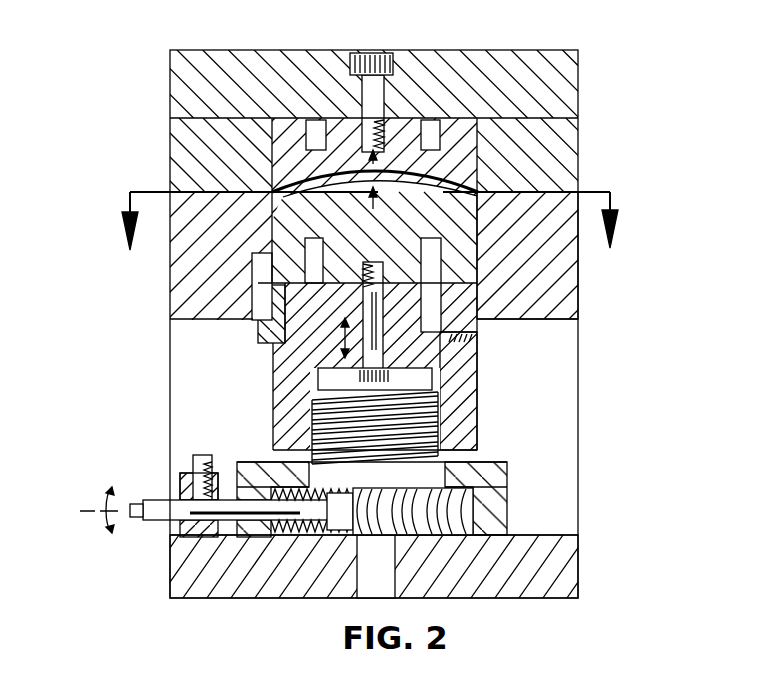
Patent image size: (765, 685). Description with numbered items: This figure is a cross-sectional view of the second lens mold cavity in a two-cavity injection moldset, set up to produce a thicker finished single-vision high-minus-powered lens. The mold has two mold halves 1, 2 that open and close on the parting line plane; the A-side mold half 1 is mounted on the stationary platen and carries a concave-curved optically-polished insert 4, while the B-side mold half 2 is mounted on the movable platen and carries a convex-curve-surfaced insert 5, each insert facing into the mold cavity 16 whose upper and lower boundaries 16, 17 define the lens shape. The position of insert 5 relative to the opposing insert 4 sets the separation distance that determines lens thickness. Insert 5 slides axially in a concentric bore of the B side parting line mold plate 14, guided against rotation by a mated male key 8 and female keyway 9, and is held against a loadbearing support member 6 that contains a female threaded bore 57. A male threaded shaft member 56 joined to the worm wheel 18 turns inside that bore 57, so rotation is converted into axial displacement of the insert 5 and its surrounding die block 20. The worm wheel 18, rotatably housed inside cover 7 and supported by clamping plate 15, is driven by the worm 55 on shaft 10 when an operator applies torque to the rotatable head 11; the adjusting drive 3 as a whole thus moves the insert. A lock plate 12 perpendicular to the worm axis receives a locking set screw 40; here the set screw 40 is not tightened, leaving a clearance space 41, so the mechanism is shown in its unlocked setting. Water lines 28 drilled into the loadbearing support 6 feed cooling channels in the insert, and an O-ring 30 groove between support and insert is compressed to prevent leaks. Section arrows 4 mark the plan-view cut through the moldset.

The A-side mold half 1 is at (648, 139).
The B-side mold half 2 is at (655, 248).
The adjusting drive 3 is at (84, 392).
The concave-curved optically-polished mold insert 4 is at (402, 130).
The convex-curve-surfaced insert 5 is at (283, 197).
The female threaded member 6 is at (476, 405).
The cover 7 is at (480, 478).
The male key 8 is at (270, 323).
The female keyway 9 is at (201, 322).
The shaft 10 is at (180, 512).
The rotatable head 11 is at (137, 521).
The lock plate 12 is at (182, 475).
The B side parting line mold plate 14 is at (540, 290).
The clamping plate 15 is at (578, 570).
The mold cavity 16 is at (296, 183).
The workpiece lower surface 17 is at (272, 192).
The worm wheel 18 is at (507, 487).
The lower die block 20 is at (343, 341).
The water lines 28 is at (463, 347).
The O-ring 30 is at (527, 427).
The locking set screw 40 is at (202, 462).
The clearance space 41 is at (195, 500).
The worm 55 is at (358, 541).
The male threaded shaft member 56 is at (478, 456).
The female threaded bore 57 is at (300, 421).